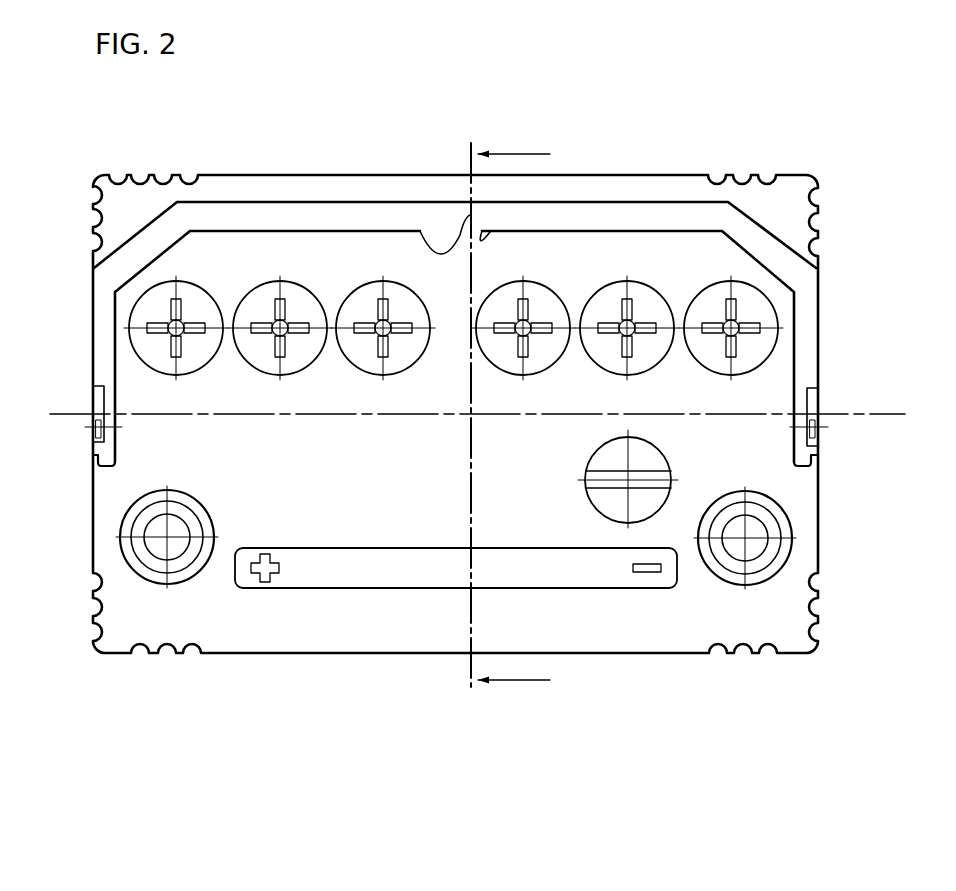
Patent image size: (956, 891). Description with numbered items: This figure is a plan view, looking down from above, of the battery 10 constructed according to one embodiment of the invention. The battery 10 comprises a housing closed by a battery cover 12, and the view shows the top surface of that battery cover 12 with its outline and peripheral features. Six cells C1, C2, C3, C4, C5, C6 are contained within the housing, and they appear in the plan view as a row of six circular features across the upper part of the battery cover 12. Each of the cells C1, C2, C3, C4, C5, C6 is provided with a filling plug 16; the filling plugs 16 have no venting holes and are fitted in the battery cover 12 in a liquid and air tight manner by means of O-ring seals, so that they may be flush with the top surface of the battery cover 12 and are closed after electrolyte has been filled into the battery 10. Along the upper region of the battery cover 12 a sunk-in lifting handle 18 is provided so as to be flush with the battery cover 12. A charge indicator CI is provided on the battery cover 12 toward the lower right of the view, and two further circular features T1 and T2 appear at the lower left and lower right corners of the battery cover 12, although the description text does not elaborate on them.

The battery 10 is at (724, 142).
The battery cover 12 is at (365, 637).
The filling plug 16 is at (606, 357).
The sunk-in lifting handle 18 is at (295, 212).
The cell C1 is at (201, 280).
The cell C2 is at (305, 280).
The cell C3 is at (412, 282).
The cell C4 is at (549, 281).
The cell C5 is at (652, 281).
The cell C6 is at (720, 281).
The terminal T1 is at (188, 490).
The terminal T2 is at (735, 490).
The charge indicator CI is at (589, 507).